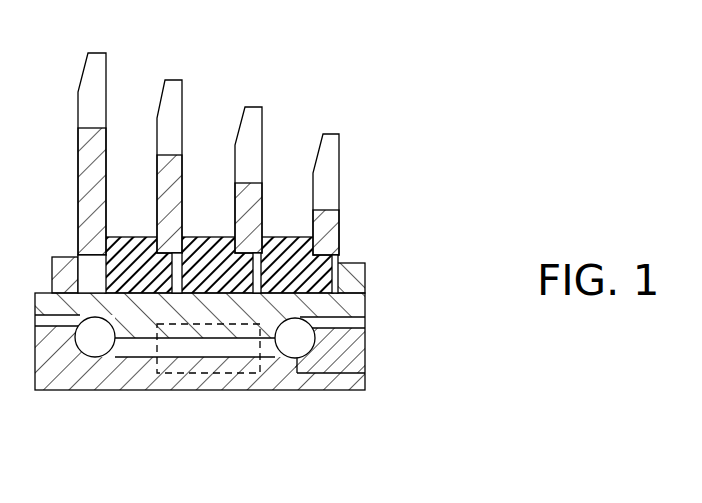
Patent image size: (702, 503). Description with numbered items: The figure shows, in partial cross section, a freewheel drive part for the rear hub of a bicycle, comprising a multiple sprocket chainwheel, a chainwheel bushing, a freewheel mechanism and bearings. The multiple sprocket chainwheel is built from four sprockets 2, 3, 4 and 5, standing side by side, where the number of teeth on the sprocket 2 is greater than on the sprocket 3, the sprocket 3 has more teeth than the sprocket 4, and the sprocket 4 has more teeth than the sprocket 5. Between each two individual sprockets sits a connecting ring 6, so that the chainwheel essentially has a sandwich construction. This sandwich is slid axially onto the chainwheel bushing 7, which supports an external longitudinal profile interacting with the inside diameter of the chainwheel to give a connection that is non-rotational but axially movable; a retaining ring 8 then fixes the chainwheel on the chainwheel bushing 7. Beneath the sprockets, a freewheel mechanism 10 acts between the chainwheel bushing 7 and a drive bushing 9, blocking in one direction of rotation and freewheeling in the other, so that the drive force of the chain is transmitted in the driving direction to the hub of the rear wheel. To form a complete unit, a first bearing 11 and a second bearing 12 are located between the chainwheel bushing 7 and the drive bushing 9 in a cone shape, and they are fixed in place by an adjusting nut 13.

The sprocket 2 is at (96, 60).
The sprocket 3 is at (174, 87).
The sprocket 4 is at (252, 115).
The sprocket 5 is at (331, 140).
The connecting ring 6 is at (333, 258).
The chainwheel bushing 7 is at (355, 303).
The retaining ring 8 is at (70, 258).
The drive bushing 9 is at (218, 380).
The freewheel mechanism 10 is at (169, 350).
The first bearing 11 is at (92, 353).
The second bearing 12 is at (290, 352).
The adjusting nut 13 is at (355, 357).